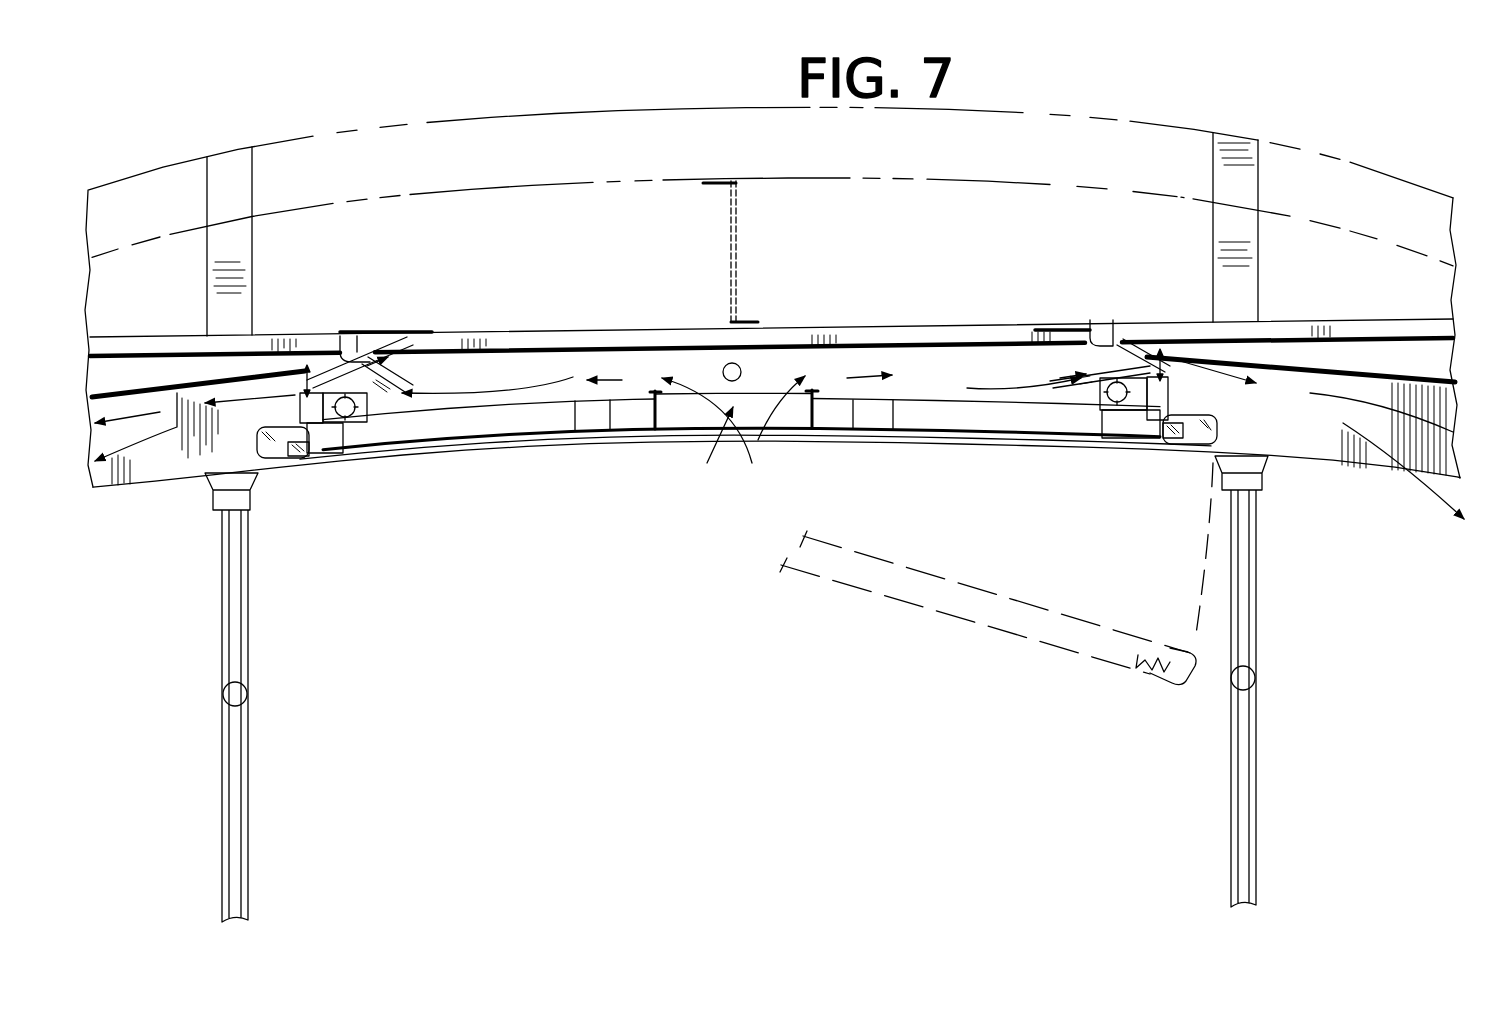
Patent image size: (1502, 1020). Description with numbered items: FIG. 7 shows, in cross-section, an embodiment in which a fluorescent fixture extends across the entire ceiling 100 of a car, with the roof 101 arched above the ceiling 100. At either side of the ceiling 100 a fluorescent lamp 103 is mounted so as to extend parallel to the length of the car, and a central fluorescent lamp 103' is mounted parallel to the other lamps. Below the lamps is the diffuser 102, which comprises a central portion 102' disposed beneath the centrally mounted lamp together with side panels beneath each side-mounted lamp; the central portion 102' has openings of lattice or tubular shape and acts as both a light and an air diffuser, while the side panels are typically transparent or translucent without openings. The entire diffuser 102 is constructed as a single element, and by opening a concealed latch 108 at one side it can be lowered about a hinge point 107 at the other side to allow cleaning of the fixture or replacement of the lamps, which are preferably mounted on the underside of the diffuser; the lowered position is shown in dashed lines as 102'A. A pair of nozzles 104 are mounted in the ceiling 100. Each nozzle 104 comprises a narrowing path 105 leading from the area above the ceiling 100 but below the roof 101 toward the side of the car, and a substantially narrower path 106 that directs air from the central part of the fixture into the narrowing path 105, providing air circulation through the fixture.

The ceiling 100 is at (1275, 325).
The roof 101 is at (587, 112).
The diffuser 102 is at (755, 445).
The central portion 102' is at (746, 433).
The lowered position of the diffuser 102'A is at (988, 615).
The fluorescent lamp 103 is at (734, 426).
The central fluorescent lamp 103' is at (716, 428).
The nozzle 104 is at (398, 325).
The narrowing path 105 is at (328, 363).
The narrower path 106 is at (381, 398).
The hinge point 107 is at (267, 447).
The concealed latch 108 is at (1182, 441).